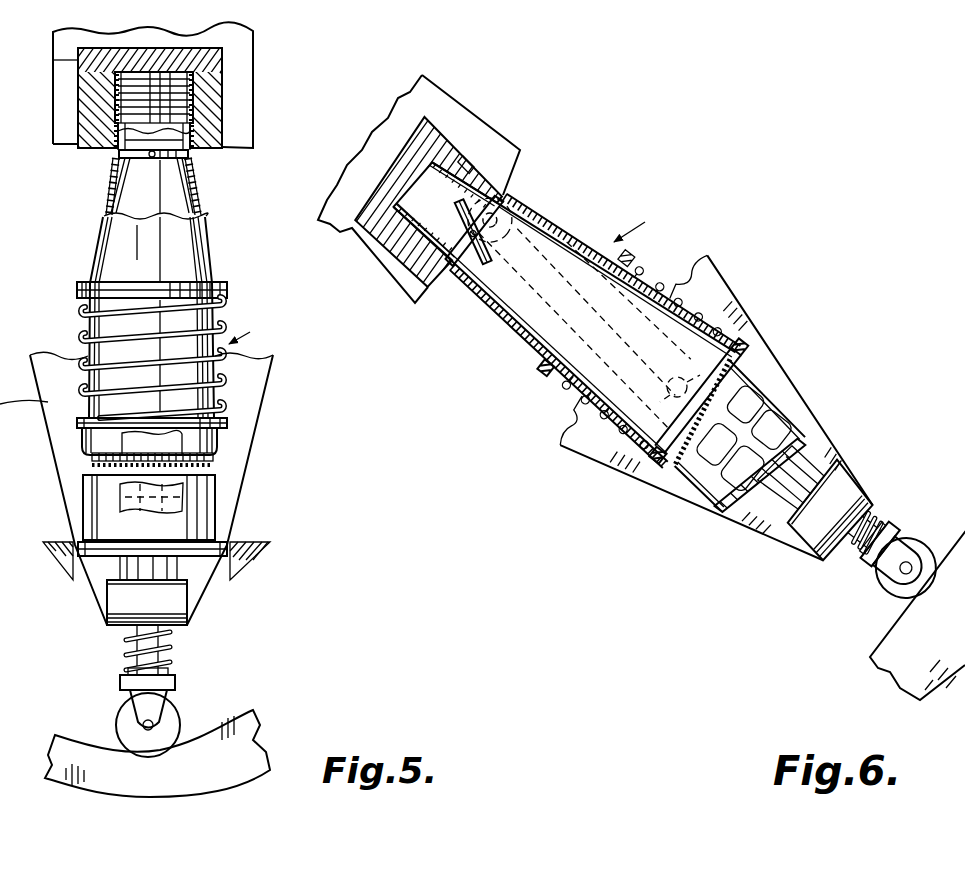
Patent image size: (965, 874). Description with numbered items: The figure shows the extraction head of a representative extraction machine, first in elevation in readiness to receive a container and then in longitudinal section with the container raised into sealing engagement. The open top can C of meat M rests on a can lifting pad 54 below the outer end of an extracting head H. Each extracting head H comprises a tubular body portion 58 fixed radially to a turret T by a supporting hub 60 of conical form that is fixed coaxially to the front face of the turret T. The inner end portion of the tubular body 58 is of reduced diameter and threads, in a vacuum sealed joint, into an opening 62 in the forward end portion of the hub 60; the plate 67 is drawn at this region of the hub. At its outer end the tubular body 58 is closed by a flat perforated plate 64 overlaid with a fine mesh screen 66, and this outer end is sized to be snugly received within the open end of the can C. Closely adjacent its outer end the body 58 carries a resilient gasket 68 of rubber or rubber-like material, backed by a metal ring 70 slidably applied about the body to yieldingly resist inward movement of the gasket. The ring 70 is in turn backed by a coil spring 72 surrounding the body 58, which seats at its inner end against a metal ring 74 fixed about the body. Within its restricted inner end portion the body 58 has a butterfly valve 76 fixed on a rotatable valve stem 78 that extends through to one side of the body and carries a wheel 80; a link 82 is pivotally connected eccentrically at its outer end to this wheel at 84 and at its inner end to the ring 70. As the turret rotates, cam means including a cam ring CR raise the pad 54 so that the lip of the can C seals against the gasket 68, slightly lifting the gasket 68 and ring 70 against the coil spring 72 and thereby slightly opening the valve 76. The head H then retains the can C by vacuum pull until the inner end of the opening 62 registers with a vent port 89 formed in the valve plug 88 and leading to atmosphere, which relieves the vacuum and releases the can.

In FIG. 5, the can lifting pad 54 is at (200, 588).
In FIG. 6, the can lifting pad 54 is at (820, 430).
In FIG. 5, the tubular body portion 58 is at (205, 195).
In FIG. 6, the tubular body portion 58 is at (523, 342).
In FIG. 5, the supporting hub 60 is at (64, 146).
In FIG. 6, the supporting hub 60 is at (402, 290).
In FIG. 5, the opening 62 is at (194, 90).
In FIG. 5, the flat perforated plate 64 is at (213, 456).
In FIG. 6, the flat perforated plate 64 is at (750, 353).
In FIG. 5, the fine mesh screen 66 is at (92, 466).
In FIG. 6, the fine mesh screen 66 is at (770, 380).
In FIG. 6, the plate 67 is at (478, 160).
In FIG. 5, the resilient gasket 68 is at (215, 442).
In FIG. 6, the resilient gasket 68 is at (663, 462).
In FIG. 5, the metal ring 70 is at (228, 422).
In FIG. 6, the metal ring 70 is at (657, 463).
In FIG. 5, the coil spring 72 is at (88, 340).
In FIG. 6, the coil spring 72 is at (565, 388).
In FIG. 5, the metal ring 74 is at (77, 290).
In FIG. 6, the metal ring 74 is at (540, 380).
In FIG. 5, the butterfly valve 76 is at (200, 160).
In FIG. 6, the butterfly valve 76 is at (478, 302).
In FIG. 6, the valve stem 78 is at (488, 262).
In FIG. 6, the wheel 80 is at (508, 203).
In FIG. 6, the link 82 is at (588, 246).
In FIG. 6, the pivotal connection 84 is at (522, 211).
In FIG. 5, the valve plug 88 is at (253, 42).
In FIG. 6, the valve plug 88 is at (432, 100).
In FIG. 6, the vent port 89 is at (679, 376).
In FIG. 5, the extracting head H is at (248, 332).
In FIG. 6, the extracting head H is at (641, 223).
In FIG. 6, the turret T is at (723, 287).
In FIG. 5, the can C is at (100, 506).
In FIG. 6, the can C is at (707, 492).
In FIG. 5, the meat M is at (215, 498).
In FIG. 6, the meat M is at (798, 389).
In FIG. 5, the cam ring CR is at (228, 780).
In FIG. 6, the cam ring CR is at (906, 637).